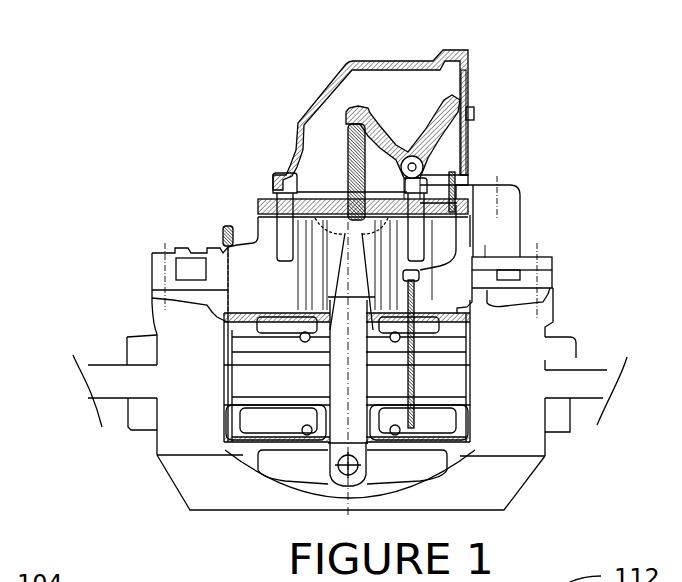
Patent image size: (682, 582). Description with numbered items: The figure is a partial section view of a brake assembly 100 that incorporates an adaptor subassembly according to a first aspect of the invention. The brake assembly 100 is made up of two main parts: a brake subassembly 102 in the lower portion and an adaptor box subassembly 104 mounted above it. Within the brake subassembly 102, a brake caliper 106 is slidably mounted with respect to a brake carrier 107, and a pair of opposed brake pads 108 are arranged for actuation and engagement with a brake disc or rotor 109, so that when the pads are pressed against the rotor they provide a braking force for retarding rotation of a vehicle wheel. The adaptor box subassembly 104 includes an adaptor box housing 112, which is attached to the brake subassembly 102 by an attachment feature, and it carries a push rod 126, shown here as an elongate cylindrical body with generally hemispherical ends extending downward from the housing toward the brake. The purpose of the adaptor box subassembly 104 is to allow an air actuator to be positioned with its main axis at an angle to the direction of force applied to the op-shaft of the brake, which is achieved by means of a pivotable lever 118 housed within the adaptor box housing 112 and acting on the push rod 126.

The brake assembly 100 is at (150, 205).
The brake subassembly 102 is at (596, 284).
The adaptor box subassembly 104 is at (512, 103).
The brake caliper 106 is at (526, 449).
The brake carrier 107 is at (131, 432).
The brake pads 108 is at (237, 356).
The brake disc or rotor 109 is at (589, 385).
The adaptor box housing 112 is at (411, 63).
The lever 118 is at (412, 140).
The push rod 126 is at (357, 168).